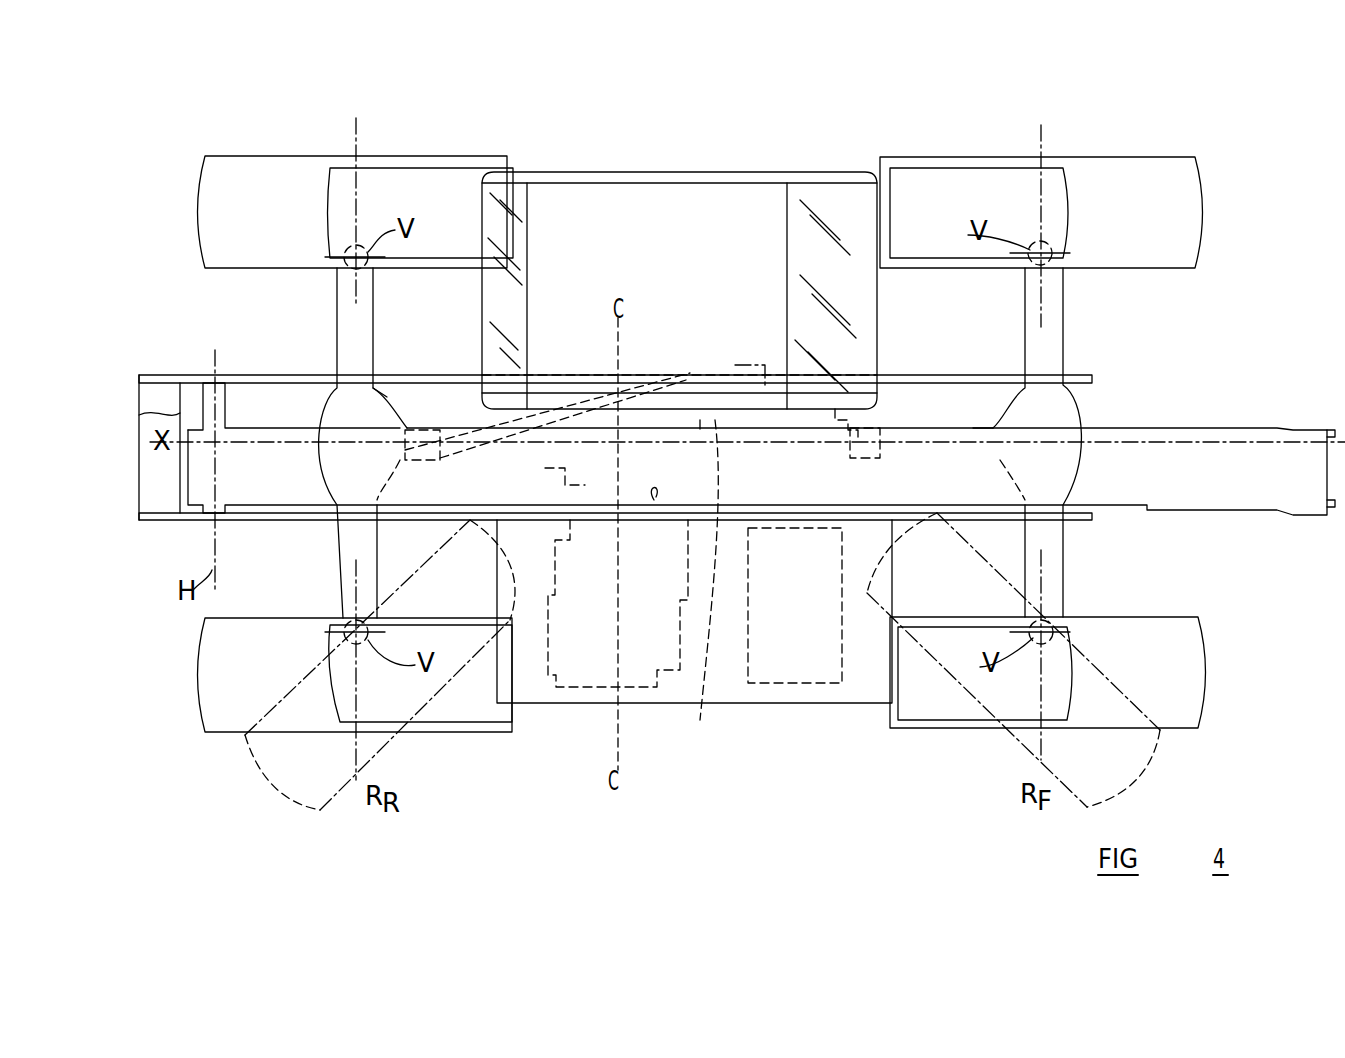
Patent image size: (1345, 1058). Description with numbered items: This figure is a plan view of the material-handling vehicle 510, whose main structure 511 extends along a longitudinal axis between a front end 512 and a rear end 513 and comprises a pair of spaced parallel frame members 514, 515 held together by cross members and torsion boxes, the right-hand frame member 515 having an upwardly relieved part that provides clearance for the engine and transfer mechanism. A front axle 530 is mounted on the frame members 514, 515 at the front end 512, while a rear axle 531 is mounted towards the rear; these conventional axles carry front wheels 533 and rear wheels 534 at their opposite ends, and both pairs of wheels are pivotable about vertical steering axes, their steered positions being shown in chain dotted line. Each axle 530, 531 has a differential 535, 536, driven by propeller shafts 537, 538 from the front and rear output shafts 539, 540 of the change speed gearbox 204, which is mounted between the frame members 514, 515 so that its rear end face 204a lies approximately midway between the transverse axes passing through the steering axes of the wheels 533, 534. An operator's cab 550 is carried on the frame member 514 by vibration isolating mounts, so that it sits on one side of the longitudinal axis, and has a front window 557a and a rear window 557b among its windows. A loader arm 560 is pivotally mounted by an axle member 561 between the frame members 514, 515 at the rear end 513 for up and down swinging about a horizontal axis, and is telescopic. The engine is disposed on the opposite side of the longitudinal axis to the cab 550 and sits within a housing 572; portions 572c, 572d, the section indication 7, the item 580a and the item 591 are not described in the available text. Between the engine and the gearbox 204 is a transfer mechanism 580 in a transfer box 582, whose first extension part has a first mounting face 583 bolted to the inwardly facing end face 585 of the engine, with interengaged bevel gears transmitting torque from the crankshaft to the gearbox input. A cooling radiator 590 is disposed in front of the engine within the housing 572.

The direction arrow / section line 7 is at (793, 372).
The change speed gearbox 204 is at (758, 368).
The rear end face of the gearbox 204a is at (700, 692).
The material-handling vehicle 510 is at (766, 165).
The main structure 511 is at (228, 380).
The front end 512 is at (1130, 133).
The rear end 513 is at (228, 142).
The frame member 514 is at (212, 380).
The frame member 515 is at (200, 518).
The front axle 530 is at (1063, 336).
The rear axle 531 is at (336, 297).
The front wheels 533 is at (1188, 157).
The rear wheels 534 is at (280, 156).
The differential 535 is at (1072, 413).
The differential 536 is at (325, 408).
The propeller shaft 537 is at (930, 430).
The propeller shaft 538 is at (440, 440).
The front output shaft 539 is at (890, 440).
The rear output shaft 540 is at (692, 408).
The operator's cab 550 is at (680, 170).
The front window 557a is at (828, 200).
The rear window 557b is at (496, 210).
The loader arm 560 is at (1135, 423).
The axle member 561 is at (200, 410).
The housing 572 is at (848, 705).
The lower body front portion 572c is at (979, 596).
The lower body rear portion 572d is at (490, 552).
The transfer mechanism 580 is at (725, 378).
The steering link rod 580a is at (575, 420).
The transfer box 582 is at (562, 483).
The first mounting face 583 is at (618, 603).
The inwardly facing end face of the engine 585 is at (654, 500).
The cooling radiator 590 is at (792, 688).
The battery housing 591 is at (740, 692).